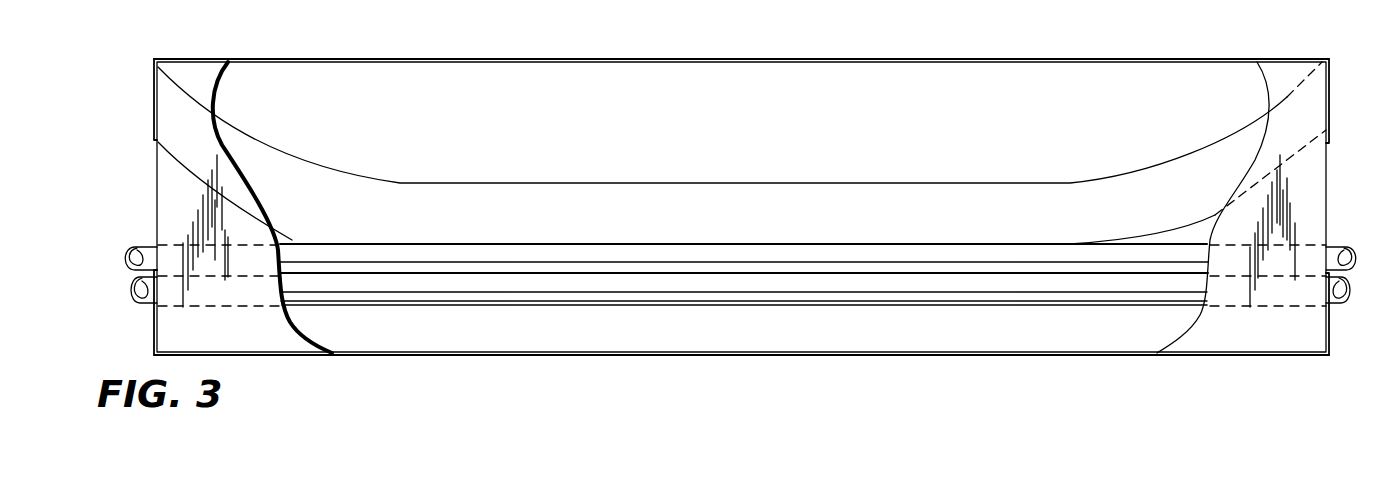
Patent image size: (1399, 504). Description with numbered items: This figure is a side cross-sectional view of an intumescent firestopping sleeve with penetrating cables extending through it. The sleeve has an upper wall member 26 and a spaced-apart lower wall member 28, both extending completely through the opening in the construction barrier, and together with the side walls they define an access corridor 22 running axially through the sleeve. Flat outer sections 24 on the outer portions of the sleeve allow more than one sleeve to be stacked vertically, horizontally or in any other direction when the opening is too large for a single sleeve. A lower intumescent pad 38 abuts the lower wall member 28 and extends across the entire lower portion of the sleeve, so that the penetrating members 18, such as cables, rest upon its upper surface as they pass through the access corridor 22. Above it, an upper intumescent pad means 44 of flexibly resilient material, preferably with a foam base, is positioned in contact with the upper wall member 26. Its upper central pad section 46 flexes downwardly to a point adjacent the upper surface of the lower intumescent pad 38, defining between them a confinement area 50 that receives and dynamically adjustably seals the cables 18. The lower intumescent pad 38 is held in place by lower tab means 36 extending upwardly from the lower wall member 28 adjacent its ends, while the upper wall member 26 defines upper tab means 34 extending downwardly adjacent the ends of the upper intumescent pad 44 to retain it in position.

The penetrating members 18 is at (483, 287).
The access corridor 22 is at (170, 177).
The flat outer sections 24 is at (1108, 60).
The upper wall member 26 is at (987, 61).
The lower wall member 28 is at (1287, 356).
The upper tab means 34 is at (154, 98).
The lower tab means 36 is at (153, 325).
The lower intumescent pad 38 is at (884, 338).
The upper intumescent pad means 44 is at (835, 221).
The upper central pad section 46 is at (1017, 180).
The confinement area 50 is at (292, 240).